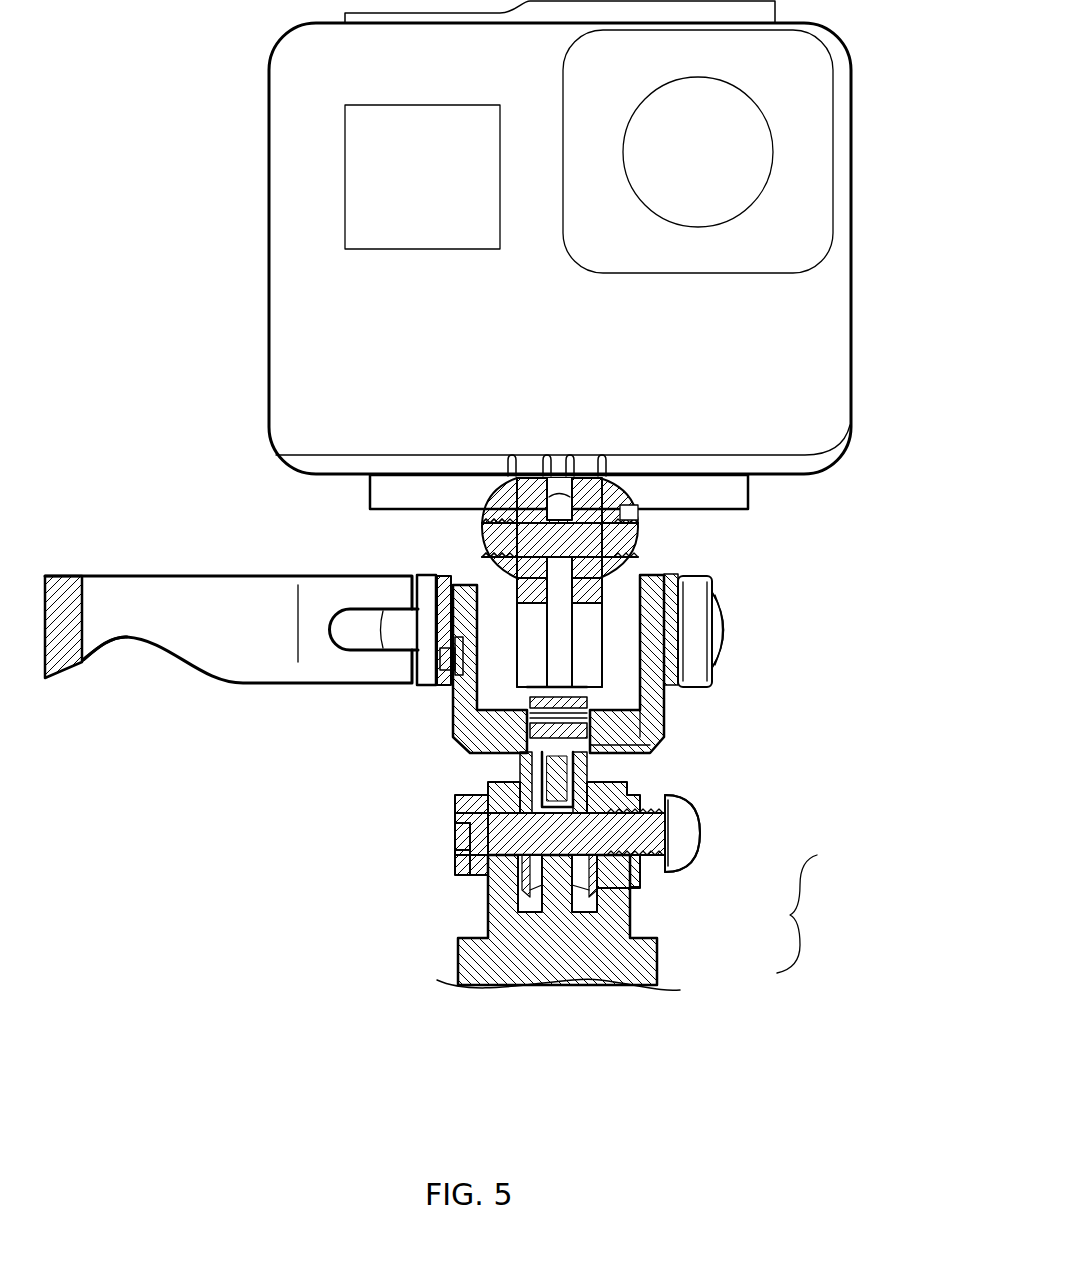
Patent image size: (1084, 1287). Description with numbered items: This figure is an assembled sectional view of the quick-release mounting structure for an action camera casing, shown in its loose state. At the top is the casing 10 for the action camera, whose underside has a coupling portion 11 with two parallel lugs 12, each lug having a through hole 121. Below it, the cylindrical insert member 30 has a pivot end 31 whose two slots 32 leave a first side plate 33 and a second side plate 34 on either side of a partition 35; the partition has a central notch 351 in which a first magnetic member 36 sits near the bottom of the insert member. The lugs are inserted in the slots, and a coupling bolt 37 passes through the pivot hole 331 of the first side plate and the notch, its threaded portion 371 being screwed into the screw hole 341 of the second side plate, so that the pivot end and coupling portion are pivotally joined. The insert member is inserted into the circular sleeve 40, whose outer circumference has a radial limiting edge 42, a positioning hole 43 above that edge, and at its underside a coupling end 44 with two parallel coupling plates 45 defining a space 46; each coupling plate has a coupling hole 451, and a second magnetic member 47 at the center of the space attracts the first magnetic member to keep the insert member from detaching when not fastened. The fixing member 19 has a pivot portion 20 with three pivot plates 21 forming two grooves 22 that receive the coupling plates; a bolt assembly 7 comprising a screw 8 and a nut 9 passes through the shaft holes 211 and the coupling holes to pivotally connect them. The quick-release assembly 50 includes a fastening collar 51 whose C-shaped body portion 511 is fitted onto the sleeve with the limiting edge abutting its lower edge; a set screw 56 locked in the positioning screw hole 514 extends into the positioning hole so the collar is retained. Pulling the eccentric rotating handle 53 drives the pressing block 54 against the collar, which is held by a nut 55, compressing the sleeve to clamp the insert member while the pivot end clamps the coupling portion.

The bolt assembly 7 is at (808, 914).
The screw 8 is at (637, 880).
The nut 9 is at (698, 850).
The casing 10 is at (737, 362).
The coupling portion 11 is at (622, 468).
The lug 12 is at (372, 477).
The through hole 121 is at (513, 476).
The fixing member 19 is at (565, 955).
The pivot portion 20 is at (529, 977).
The pivot plate 21 is at (615, 907).
The groove 22 is at (530, 905).
The shaft hole 211 is at (455, 840).
The insert member 30 is at (468, 692).
The pivot end 31 is at (424, 588).
The slot 32 is at (690, 663).
The first side plate 33 is at (693, 598).
The pivot hole 331 is at (640, 517).
The second side plate 34 is at (292, 600).
The screw hole 341 is at (532, 517).
The partition 35 is at (324, 581).
The notch 351 is at (444, 578).
The first magnetic member 36 is at (662, 728).
The coupling bolt 37 is at (626, 535).
The threaded portion 371 is at (322, 443).
The circular sleeve 40 is at (478, 740).
The limiting edge 42 is at (668, 690).
The positioning hole 43 is at (385, 614).
The coupling end 44 is at (500, 768).
The coupling plate 45 is at (456, 806).
The coupling hole 451 is at (456, 856).
The space 46 is at (642, 770).
The second magnetic member 47 is at (660, 750).
The quick-release assembly 50 is at (228, 618).
The fastening collar 51 is at (830, 632).
The C-shaped body portion 511 is at (696, 650).
The positioning screw hole 514 is at (440, 688).
The eccentric rotating handle 53 is at (148, 603).
The pressing block 54 is at (262, 643).
The nut 55 is at (722, 598).
The set screw 56 is at (432, 650).